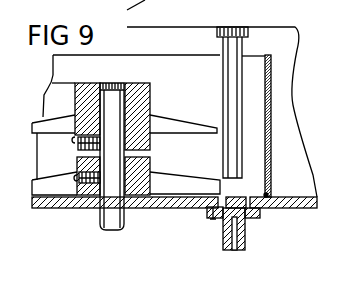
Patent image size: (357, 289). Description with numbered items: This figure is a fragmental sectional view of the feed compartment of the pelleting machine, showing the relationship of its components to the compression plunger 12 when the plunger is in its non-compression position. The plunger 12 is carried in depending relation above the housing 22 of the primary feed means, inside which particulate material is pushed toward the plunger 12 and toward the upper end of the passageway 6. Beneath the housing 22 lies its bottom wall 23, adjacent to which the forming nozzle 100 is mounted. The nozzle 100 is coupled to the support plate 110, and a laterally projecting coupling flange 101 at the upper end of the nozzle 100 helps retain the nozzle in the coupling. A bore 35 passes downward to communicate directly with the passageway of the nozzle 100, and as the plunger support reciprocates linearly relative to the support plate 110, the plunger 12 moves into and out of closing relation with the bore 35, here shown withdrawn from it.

The plunger 12 is at (250, 56).
The housing 22 is at (271, 107).
The bottom wall 23 is at (267, 196).
The coupling flange 101 is at (235, 199).
The support plate 110 is at (283, 208).
The bore 35 is at (250, 220).
The passageway 6 is at (225, 247).
The nozzle 100 is at (225, 220).